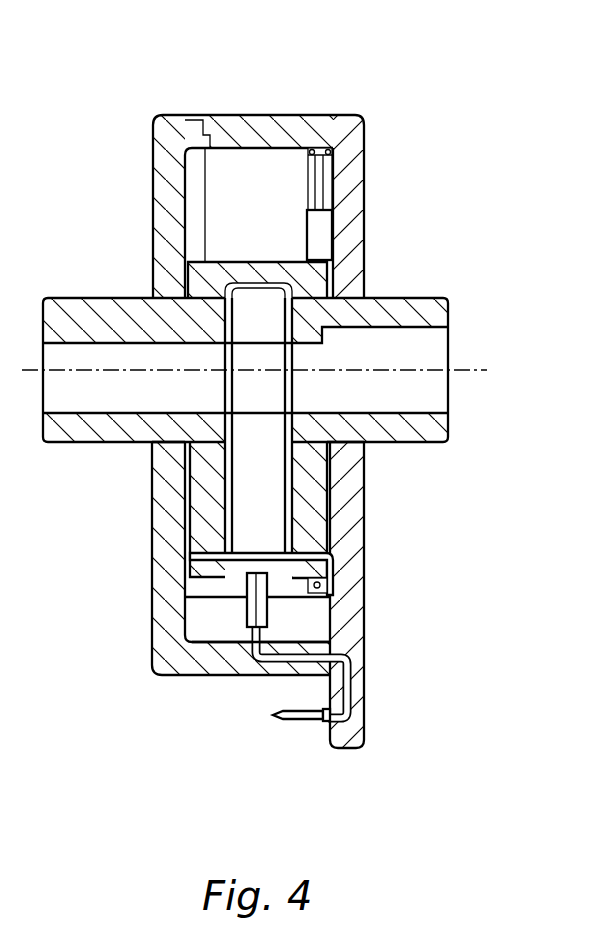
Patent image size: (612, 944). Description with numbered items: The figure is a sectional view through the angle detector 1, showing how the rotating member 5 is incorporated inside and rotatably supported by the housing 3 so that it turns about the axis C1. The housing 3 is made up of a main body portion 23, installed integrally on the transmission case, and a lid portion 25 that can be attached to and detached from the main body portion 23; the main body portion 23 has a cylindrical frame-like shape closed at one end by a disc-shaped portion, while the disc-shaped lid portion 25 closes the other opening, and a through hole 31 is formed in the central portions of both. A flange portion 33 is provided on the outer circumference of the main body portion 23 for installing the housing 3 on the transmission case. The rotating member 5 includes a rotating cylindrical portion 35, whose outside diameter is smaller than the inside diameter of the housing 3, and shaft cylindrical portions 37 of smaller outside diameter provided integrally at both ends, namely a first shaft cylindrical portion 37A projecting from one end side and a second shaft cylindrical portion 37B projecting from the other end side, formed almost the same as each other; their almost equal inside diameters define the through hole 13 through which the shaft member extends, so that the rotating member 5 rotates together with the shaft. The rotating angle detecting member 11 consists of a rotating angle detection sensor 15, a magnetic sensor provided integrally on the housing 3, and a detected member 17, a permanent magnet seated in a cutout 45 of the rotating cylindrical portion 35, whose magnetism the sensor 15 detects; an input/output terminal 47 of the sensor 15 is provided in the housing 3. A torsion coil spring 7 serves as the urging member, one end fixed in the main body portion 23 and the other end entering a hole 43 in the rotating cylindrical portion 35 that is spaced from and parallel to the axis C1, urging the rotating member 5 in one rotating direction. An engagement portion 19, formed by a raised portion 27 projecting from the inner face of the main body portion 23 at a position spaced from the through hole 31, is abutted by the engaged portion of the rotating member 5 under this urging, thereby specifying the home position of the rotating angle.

The angle detector 1 is at (372, 85).
The housing 3 is at (285, 393).
The rotating member 5 is at (392, 297).
The torsion coil spring 7 is at (307, 170).
The rotating angle detecting member 11 is at (223, 627).
The through hole 13 is at (67, 400).
The rotating angle detection sensor 15 is at (265, 615).
The detected member 17 is at (275, 515).
The engagement portion 19 is at (393, 226).
The raised portion 27 is at (320, 227).
The main body portion 23 is at (233, 115).
The lid portion 25 is at (153, 137).
The through hole 31 is at (142, 437).
The flange portion 33 is at (364, 717).
The rotating cylindrical portion 35 is at (188, 527).
The shaft cylindrical portions 37 is at (288, 334).
The first shaft cylindrical portion 37A is at (423, 297).
The second shaft cylindrical portion 37B is at (65, 297).
The hole 43 is at (308, 555).
The cutout 45 is at (205, 582).
The input/output terminal 47 is at (295, 720).
The axis C1 is at (470, 367).